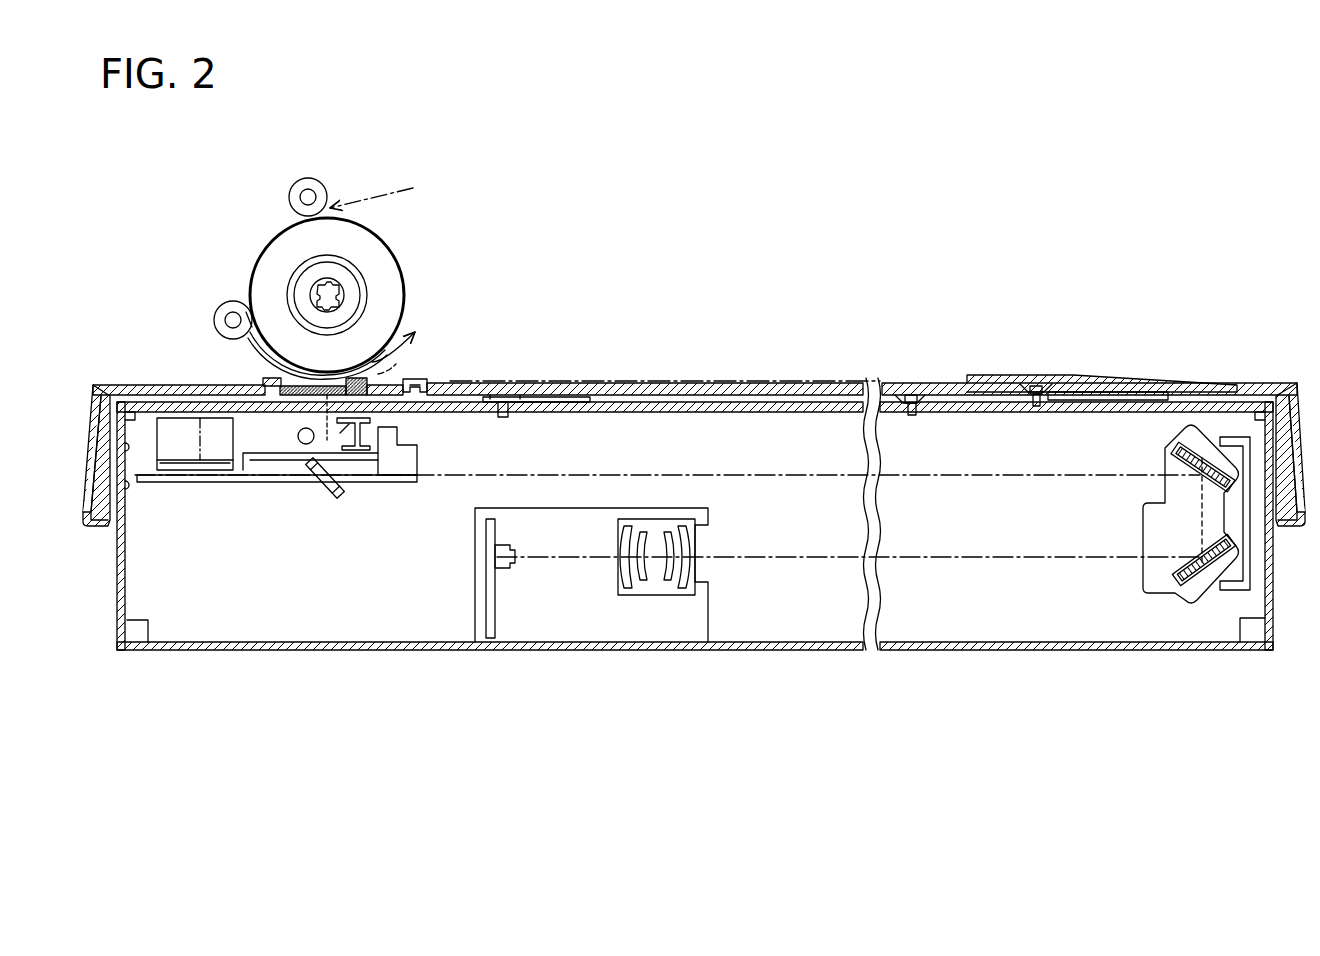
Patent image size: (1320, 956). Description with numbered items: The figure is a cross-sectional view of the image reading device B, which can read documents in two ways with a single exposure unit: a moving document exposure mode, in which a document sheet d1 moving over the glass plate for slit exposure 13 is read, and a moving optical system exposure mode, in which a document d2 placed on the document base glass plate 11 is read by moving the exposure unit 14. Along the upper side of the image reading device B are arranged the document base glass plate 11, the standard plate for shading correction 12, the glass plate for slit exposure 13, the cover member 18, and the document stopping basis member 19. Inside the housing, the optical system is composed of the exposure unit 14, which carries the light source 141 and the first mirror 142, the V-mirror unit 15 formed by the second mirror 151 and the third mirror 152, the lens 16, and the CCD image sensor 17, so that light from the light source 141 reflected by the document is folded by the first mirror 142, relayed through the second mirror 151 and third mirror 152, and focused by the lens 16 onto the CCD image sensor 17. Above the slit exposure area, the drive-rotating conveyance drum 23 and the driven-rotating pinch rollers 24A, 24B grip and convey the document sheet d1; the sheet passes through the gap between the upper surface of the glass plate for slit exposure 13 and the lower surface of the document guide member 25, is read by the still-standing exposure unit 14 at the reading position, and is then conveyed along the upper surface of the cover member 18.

The image reading device B is at (585, 365).
The document base glass plate 11 is at (762, 383).
The standard plate for shading correction 12 is at (385, 377).
The glass plate for slit exposure 13 is at (282, 393).
The exposure unit 14 is at (282, 462).
The light source 141 is at (297, 436).
The first mirror 142 is at (336, 494).
The V-mirror unit 15 is at (1155, 455).
The second mirror 151 is at (1177, 462).
The third mirror 152 is at (1181, 568).
The lens 16 is at (705, 520).
The CCD image sensor 17 is at (508, 548).
The cover member 18 is at (430, 378).
The document stopping basis member 19 is at (1130, 377).
The conveyance drum 23 is at (263, 242).
The pinch roller 24A is at (306, 178).
The pinch roller 24B is at (220, 304).
The document guide member 25 is at (297, 380).
The document sheet d1 is at (383, 190).
The document d2 is at (487, 382).